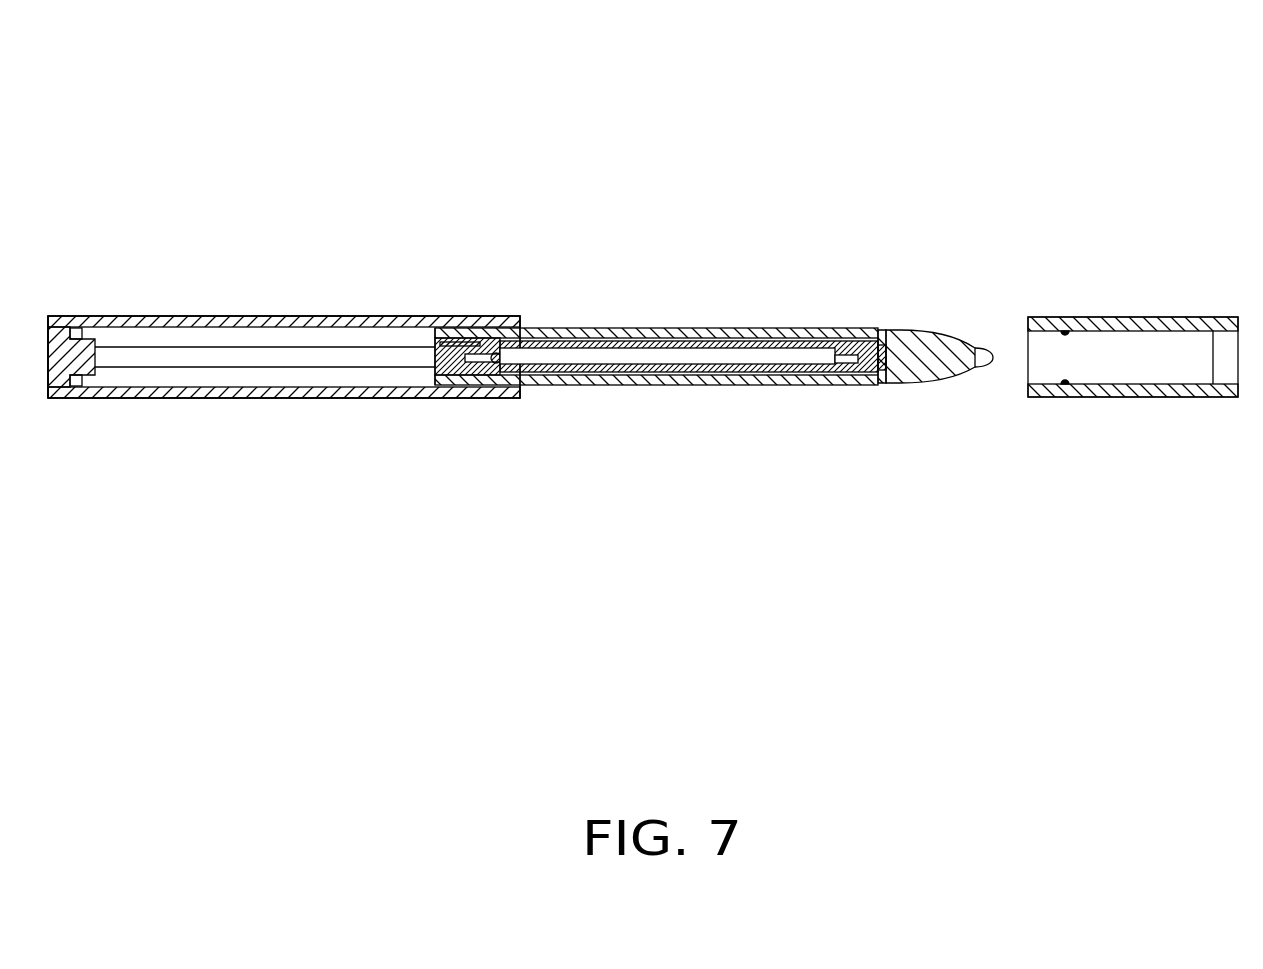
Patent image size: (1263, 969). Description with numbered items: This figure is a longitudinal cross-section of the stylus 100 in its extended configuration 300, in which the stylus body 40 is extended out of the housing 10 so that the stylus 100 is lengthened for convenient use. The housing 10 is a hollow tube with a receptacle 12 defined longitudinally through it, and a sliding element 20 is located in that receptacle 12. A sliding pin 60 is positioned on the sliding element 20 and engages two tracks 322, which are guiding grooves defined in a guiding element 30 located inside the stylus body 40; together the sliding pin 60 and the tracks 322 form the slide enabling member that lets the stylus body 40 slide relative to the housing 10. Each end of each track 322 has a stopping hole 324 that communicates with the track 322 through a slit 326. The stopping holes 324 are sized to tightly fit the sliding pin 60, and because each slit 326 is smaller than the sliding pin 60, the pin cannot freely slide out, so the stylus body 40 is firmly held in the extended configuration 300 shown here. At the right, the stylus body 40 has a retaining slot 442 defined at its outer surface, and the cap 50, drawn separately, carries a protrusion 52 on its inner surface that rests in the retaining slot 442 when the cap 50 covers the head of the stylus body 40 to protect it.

The extended configuration 300 is at (1022, 63).
The stylus 100 is at (508, 120).
The housing 10 is at (247, 322).
The receptacle 12 is at (155, 343).
The sliding element 20 is at (182, 358).
The guiding element 30 is at (692, 340).
The tracks 322 is at (603, 357).
The stopping hole 324 is at (495, 373).
The slit 326 is at (515, 357).
The sliding pin 60 is at (484, 342).
The stylus body 40 is at (795, 343).
The retaining slot 442 is at (898, 332).
The cap 50 is at (1142, 322).
The protrusion 52 is at (1065, 330).